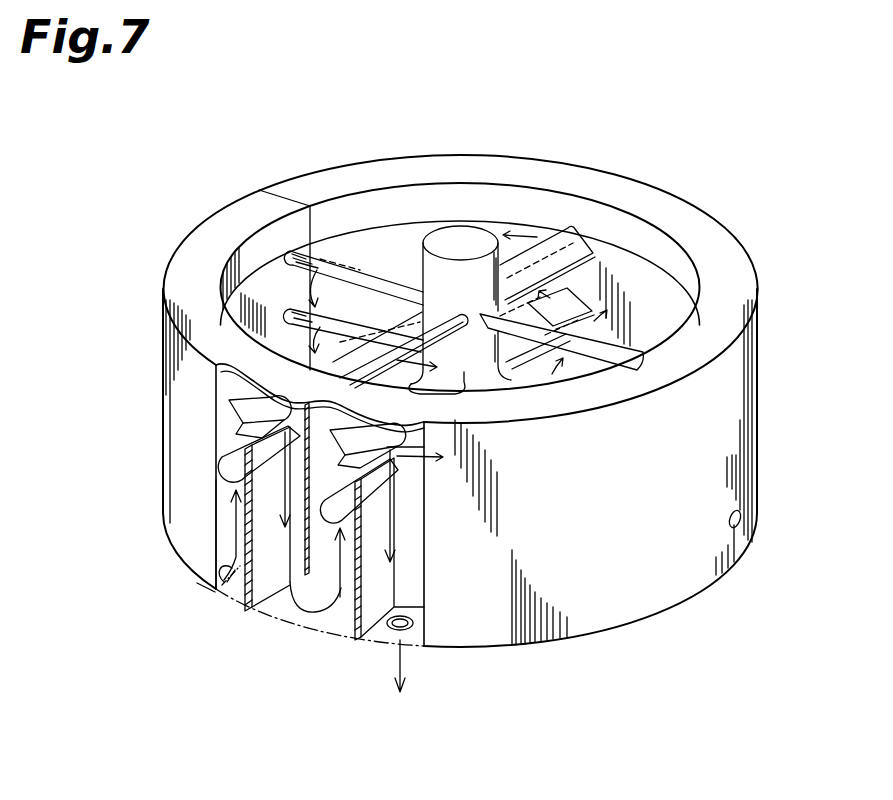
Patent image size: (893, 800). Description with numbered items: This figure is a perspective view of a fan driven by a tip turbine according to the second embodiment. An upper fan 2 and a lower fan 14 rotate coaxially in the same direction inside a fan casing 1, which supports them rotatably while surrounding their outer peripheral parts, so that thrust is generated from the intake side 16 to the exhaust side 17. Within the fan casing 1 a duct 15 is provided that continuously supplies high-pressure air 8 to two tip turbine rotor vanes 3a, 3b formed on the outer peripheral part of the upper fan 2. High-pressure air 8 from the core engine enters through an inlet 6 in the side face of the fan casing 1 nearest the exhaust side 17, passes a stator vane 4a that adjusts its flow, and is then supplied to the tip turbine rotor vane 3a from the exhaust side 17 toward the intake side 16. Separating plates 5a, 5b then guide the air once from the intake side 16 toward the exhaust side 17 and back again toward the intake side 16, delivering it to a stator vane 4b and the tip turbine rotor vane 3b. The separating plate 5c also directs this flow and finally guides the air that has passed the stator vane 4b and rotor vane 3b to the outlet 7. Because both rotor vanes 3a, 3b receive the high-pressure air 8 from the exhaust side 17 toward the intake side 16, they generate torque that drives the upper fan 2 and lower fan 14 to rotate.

The fan casing 1 is at (626, 600).
The upper fan 2 is at (373, 267).
The tip turbine rotor vane 3a is at (263, 418).
The tip turbine rotor vane 3b is at (393, 433).
The stator vane 4a is at (243, 463).
The stator vane 4b is at (348, 497).
The separating plate 5a is at (264, 578).
The separating plate 5b is at (324, 560).
The separating plate 5c is at (380, 583).
The inlet 6 is at (221, 606).
The outlet 7 is at (393, 632).
The high-pressure air 8 is at (197, 583).
The lower fan 14 is at (572, 300).
The duct 15 is at (223, 518).
The intake side 16 is at (500, 199).
The exhaust side 17 is at (483, 668).